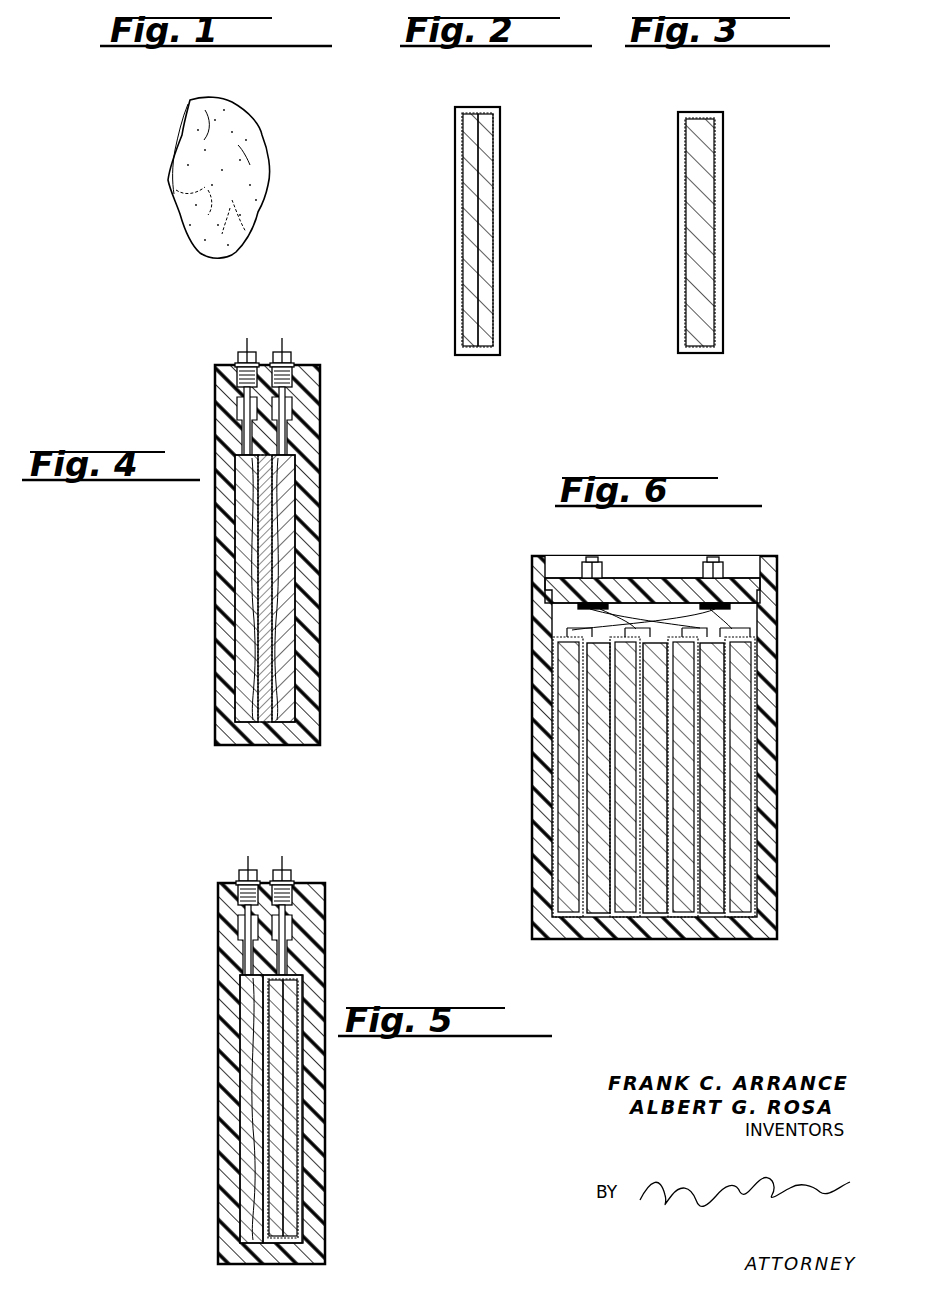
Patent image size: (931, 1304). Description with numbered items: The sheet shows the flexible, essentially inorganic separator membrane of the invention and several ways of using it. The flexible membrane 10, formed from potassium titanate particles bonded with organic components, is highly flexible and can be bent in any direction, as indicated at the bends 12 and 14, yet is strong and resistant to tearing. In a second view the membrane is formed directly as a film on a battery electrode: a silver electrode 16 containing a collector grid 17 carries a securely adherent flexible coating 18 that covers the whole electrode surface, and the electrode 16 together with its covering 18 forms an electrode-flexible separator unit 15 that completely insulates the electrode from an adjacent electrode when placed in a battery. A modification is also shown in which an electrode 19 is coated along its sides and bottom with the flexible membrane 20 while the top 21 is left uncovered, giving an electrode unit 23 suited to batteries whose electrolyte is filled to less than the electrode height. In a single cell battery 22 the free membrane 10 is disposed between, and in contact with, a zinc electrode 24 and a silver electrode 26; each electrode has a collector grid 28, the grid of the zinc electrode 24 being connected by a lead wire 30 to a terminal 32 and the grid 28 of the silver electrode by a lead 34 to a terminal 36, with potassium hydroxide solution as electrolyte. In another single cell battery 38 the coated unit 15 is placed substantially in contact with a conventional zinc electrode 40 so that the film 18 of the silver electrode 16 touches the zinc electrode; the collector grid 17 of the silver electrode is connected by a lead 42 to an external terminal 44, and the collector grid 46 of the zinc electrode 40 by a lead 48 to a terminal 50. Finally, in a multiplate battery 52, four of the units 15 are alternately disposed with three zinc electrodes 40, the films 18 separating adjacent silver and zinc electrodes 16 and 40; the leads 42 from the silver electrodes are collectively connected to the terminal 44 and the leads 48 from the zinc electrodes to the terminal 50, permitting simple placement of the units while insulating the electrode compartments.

In FIG. 1, the flexible membrane 10 is at (178, 125).
In FIG. 4, the flexible membrane 10 is at (266, 550).
In FIG. 1, the bend in membrane 12 is at (178, 205).
In FIG. 1, the bend in membrane 14 is at (208, 105).
In FIG. 2, the electrode-flexible separator unit 15 is at (512, 181).
In FIG. 5, the electrode-flexible separator unit 15 is at (306, 979).
In FIG. 6, the electrode-flexible separator unit 15 is at (596, 733).
In FIG. 2, the electrode 16 is at (484, 212).
In FIG. 5, the electrode 16 is at (290, 1148).
In FIG. 6, the electrode 16 is at (630, 850).
In FIG. 2, the collector grid 17 is at (478, 246).
In FIG. 5, the collector grid 17 is at (286, 1183).
In FIG. 2, the flexible separator coating 18 is at (494, 278).
In FIG. 5, the flexible separator coating 18 is at (270, 1108).
In FIG. 6, the flexible separator coating 18 is at (670, 766).
In FIG. 3, the electrode 19 is at (704, 210).
In FIG. 3, the flexible membrane 20 is at (718, 251).
In FIG. 3, the top 21 is at (700, 111).
In FIG. 4, the battery 22 is at (322, 523).
In FIG. 3, the electrode unit 23 is at (735, 152).
In FIG. 4, the zinc electrode 24 is at (290, 598).
In FIG. 4, the silver electrode 26 is at (246, 588).
In FIG. 4, the collector grid 28 is at (250, 628).
In FIG. 4, the lead wire 30 is at (288, 418).
In FIG. 4, the terminal 32 is at (292, 358).
In FIG. 4, the lead 34 is at (240, 418).
In FIG. 4, the terminal 36 is at (238, 358).
In FIG. 5, the battery 38 is at (328, 937).
In FIG. 5, the zinc electrode 40 is at (250, 1053).
In FIG. 6, the zinc electrode 40 is at (598, 790).
In FIG. 5, the lead 42 is at (286, 948).
In FIG. 6, the lead 42 is at (760, 621).
In FIG. 5, the external terminal 44 is at (290, 870).
In FIG. 6, the external terminal 44 is at (714, 564).
In FIG. 5, the collector grid 46 is at (250, 1132).
In FIG. 5, the lead 48 is at (246, 938).
In FIG. 6, the lead 48 is at (600, 622).
In FIG. 5, the terminal 50 is at (242, 870).
In FIG. 6, the terminal 50 is at (592, 564).
In FIG. 6, the multiplate battery 52 is at (778, 679).